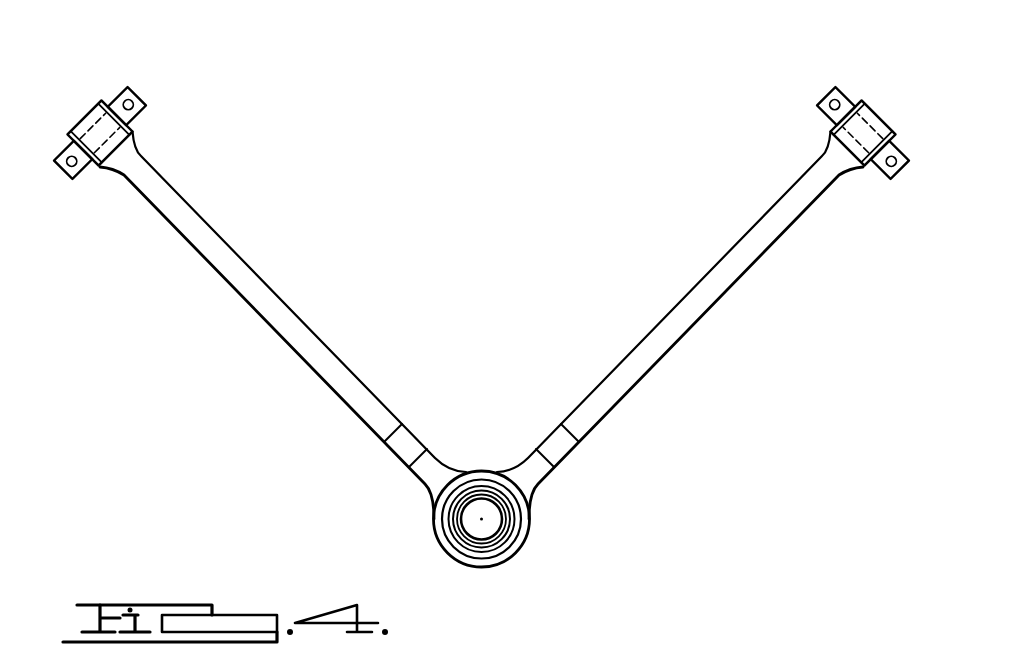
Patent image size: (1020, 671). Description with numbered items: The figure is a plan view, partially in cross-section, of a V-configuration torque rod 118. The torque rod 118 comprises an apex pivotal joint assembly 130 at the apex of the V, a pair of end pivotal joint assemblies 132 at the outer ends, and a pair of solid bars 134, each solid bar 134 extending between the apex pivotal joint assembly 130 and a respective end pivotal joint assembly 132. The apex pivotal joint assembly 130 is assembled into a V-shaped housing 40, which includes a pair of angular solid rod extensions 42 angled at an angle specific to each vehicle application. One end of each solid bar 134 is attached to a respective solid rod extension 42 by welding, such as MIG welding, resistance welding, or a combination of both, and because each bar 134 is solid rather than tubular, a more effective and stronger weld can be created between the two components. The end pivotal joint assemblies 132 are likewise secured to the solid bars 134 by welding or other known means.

The V-configuration torque rod 118 is at (468, 235).
The apex pivotal joint assembly 130 is at (503, 418).
The end pivotal joint assembly 132 is at (95, 84).
The solid bar 134 is at (234, 262).
The V-shaped housing 40 is at (515, 556).
The solid rod extension 42 is at (428, 483).